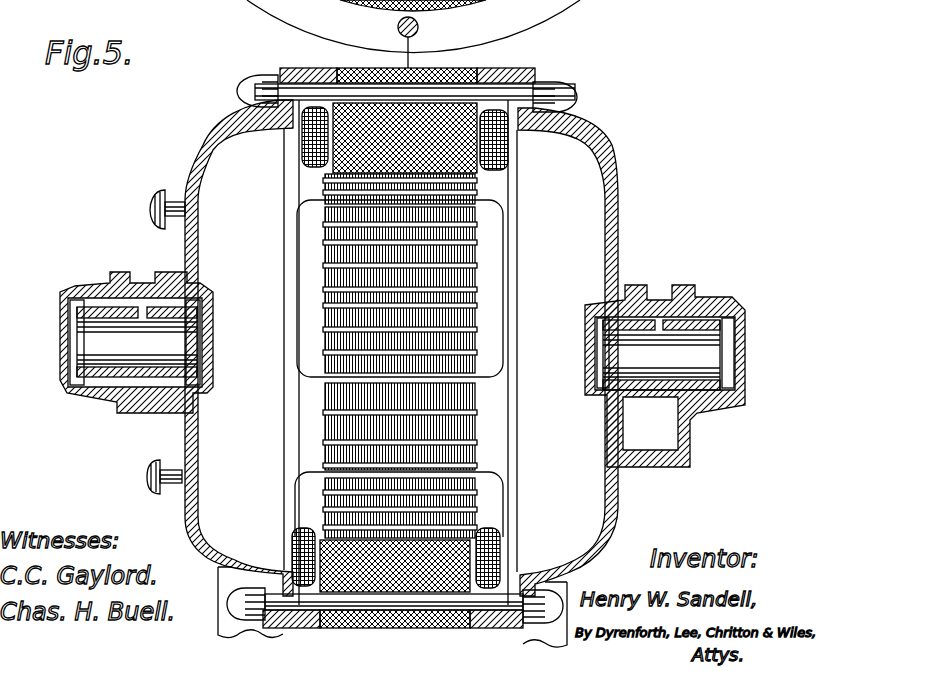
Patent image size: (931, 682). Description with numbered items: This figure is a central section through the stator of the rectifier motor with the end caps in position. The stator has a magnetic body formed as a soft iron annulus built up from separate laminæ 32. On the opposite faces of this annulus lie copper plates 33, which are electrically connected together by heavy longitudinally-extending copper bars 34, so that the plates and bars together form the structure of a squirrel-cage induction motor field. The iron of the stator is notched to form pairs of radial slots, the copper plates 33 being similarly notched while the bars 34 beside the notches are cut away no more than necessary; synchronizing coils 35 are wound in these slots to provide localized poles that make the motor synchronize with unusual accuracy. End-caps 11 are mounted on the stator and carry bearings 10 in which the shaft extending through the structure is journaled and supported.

The bearings 10 is at (87, 345).
The end-caps 11 is at (203, 147).
The laminæ 32 is at (407, 68).
The copper plates 33 is at (338, 68).
The copper bars 34 is at (463, 525).
The synchronizing coils 35 is at (493, 228).